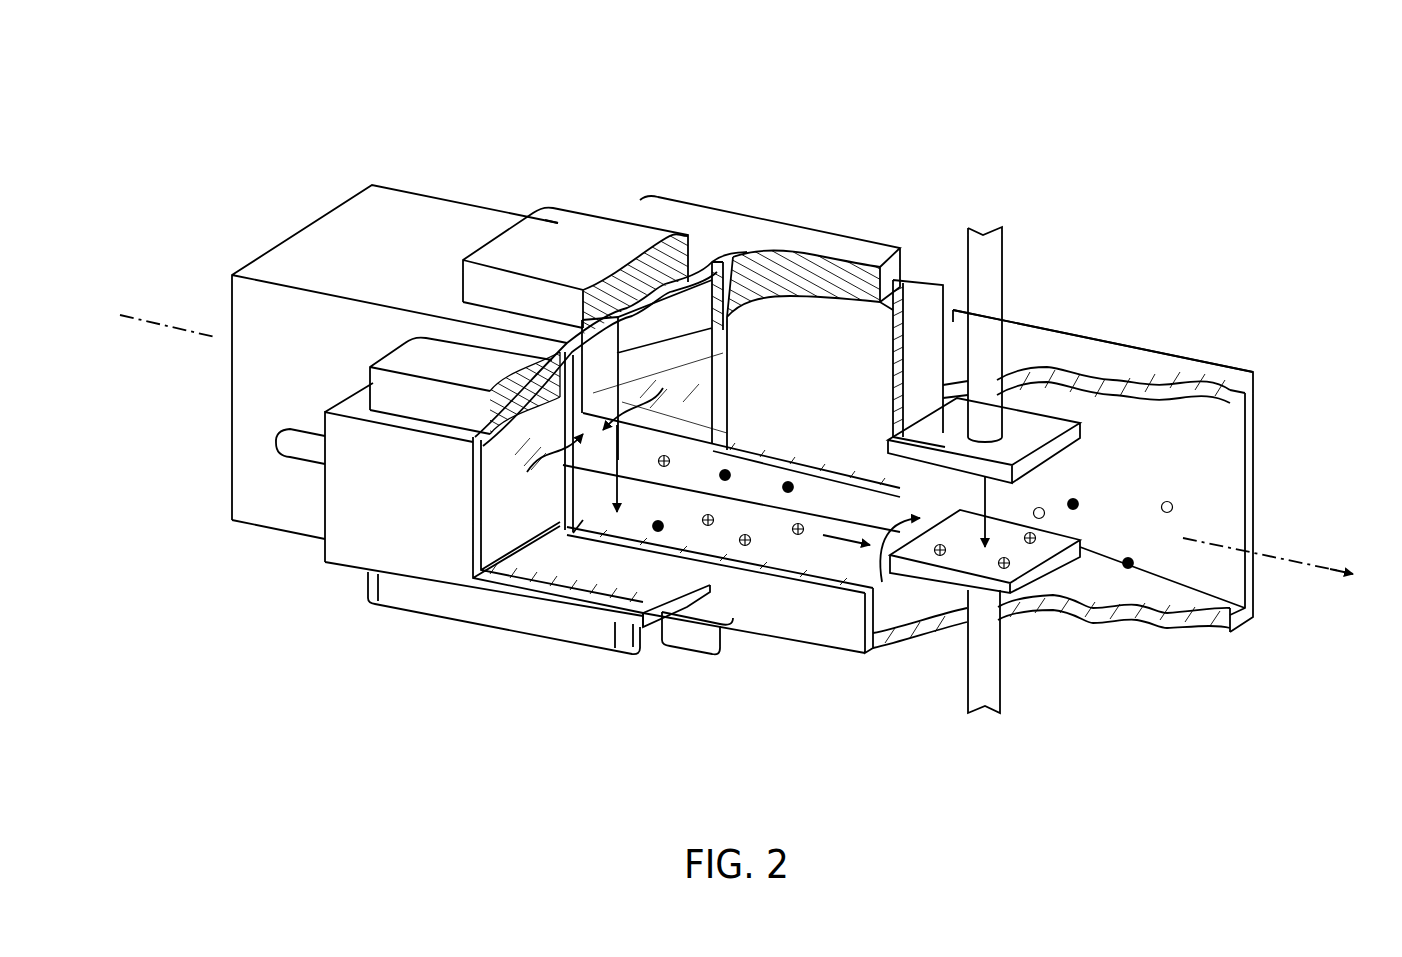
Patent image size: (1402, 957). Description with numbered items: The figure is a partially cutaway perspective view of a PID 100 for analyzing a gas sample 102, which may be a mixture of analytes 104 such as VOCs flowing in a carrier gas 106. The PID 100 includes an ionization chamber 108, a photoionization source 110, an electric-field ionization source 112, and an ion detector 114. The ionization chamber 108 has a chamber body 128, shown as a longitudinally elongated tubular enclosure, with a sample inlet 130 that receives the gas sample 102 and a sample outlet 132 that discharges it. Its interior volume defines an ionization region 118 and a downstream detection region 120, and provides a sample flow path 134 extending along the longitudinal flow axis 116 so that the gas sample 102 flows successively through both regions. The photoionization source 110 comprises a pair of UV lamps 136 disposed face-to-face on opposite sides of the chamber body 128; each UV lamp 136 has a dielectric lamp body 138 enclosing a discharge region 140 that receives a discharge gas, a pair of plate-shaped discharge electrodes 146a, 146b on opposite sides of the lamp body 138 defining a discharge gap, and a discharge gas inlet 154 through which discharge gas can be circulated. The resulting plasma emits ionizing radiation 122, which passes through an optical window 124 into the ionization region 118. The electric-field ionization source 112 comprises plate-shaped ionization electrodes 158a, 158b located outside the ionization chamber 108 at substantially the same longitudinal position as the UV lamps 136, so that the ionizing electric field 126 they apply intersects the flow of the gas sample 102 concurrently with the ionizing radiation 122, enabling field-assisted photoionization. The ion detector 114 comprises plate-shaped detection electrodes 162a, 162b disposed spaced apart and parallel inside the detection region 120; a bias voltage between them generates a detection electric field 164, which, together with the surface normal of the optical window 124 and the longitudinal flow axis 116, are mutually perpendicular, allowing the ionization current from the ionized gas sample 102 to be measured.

The PID 100 is at (1073, 93).
The gas sample 102 is at (797, 555).
The analytes 104 is at (747, 548).
The carrier gas 106 is at (660, 533).
The ionization chamber 108 is at (1115, 366).
The photoionization source 110 is at (834, 216).
The electric-field ionization source 112 is at (569, 186).
The ion detector 114 is at (1030, 650).
The longitudinal flow axis 116 is at (1302, 566).
The ionization region 118 is at (583, 506).
The detection region 120 is at (882, 582).
The ionizing radiation 122 is at (540, 460).
The optical window 124 is at (725, 362).
The ionizing electric field 126 is at (607, 490).
The chamber body 128 is at (1198, 372).
The sample inlet 130 is at (315, 218).
The sample outlet 132 is at (1257, 455).
The sample flow path 134 is at (838, 606).
The UV lamp 136 is at (908, 222).
The lamp body 138 is at (333, 480).
The discharge region 140 is at (752, 375).
The discharge electrode 146a is at (405, 400).
The discharge electrode 146b is at (402, 580).
The discharge gas inlet 154 is at (287, 443).
The ionization electrode 158a is at (630, 237).
The ionization electrode 158b is at (693, 628).
The detection electrode 162a is at (1035, 427).
The detection electrode 162b is at (1048, 562).
The detection electric field 164 is at (987, 505).